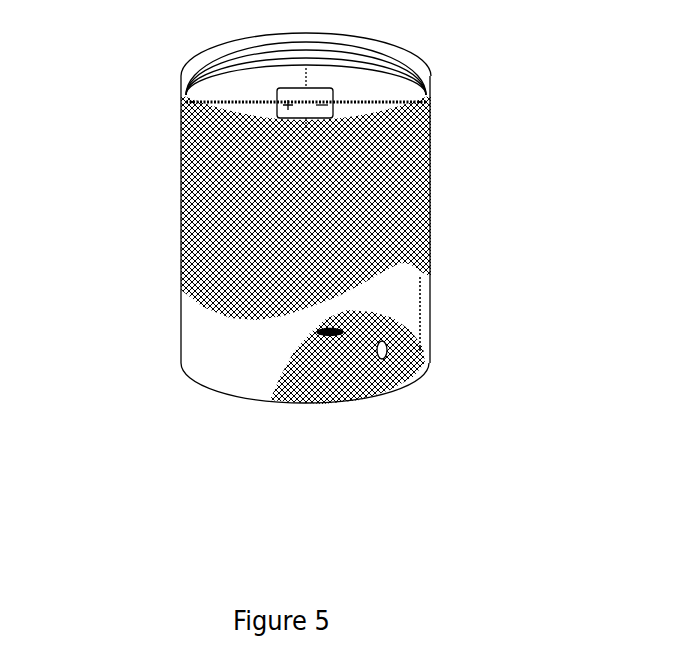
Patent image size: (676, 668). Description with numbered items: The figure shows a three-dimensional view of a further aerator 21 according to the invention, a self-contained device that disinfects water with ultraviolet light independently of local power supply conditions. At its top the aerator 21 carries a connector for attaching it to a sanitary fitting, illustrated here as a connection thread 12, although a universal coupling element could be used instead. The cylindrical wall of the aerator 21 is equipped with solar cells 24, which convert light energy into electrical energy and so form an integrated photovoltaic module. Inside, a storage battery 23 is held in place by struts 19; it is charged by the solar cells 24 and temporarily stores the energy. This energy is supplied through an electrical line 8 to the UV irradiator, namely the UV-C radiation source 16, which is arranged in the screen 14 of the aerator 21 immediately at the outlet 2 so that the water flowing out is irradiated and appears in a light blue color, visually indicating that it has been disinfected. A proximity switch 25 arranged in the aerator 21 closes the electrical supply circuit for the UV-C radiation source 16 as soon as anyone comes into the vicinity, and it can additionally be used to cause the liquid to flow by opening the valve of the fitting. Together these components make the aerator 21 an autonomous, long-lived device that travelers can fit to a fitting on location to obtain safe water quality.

The outlet 2 is at (315, 405).
The electrical line 8 is at (428, 310).
The connection thread 12 is at (203, 75).
The screen 14 is at (363, 397).
The UV-C radiation source 16 is at (428, 357).
The strut 19 is at (182, 125).
The aerator 21 is at (128, 283).
The storage battery 23 is at (307, 100).
The solar cell 24 is at (430, 168).
The proximity switch 25 is at (282, 370).